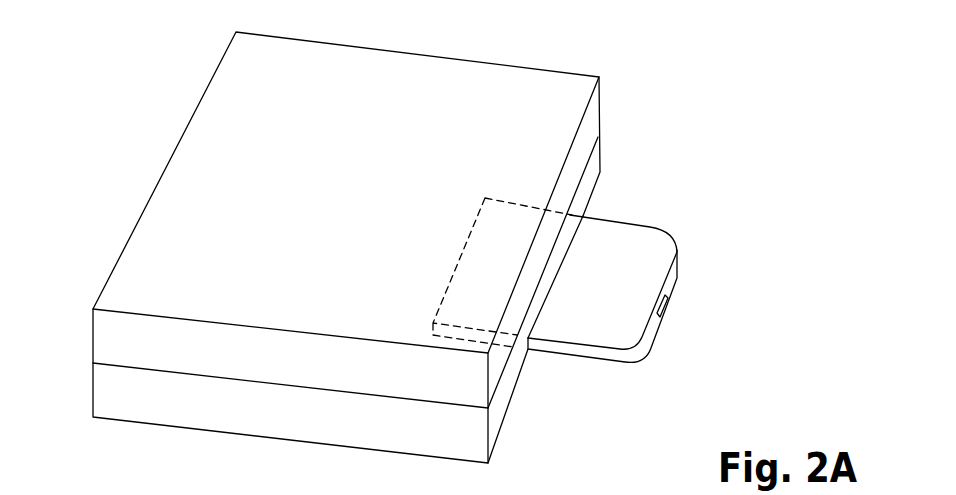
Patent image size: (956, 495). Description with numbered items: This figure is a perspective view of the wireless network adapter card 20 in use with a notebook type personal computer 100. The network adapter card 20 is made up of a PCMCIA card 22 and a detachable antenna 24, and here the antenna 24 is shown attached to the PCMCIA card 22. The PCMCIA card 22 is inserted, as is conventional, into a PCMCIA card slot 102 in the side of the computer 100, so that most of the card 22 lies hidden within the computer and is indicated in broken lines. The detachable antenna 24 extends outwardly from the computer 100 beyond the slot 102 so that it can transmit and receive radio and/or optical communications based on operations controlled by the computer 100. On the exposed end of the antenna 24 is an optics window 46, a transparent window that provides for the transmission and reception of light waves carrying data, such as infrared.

The notebook type personal computer 100 is at (197, 143).
The PCMCIA card 22 is at (500, 232).
The PCMCIA card slot 102 is at (520, 343).
The detachable antenna 24 is at (607, 350).
The optics window 46 is at (668, 308).
The wireless network adapter card 20 is at (754, 232).